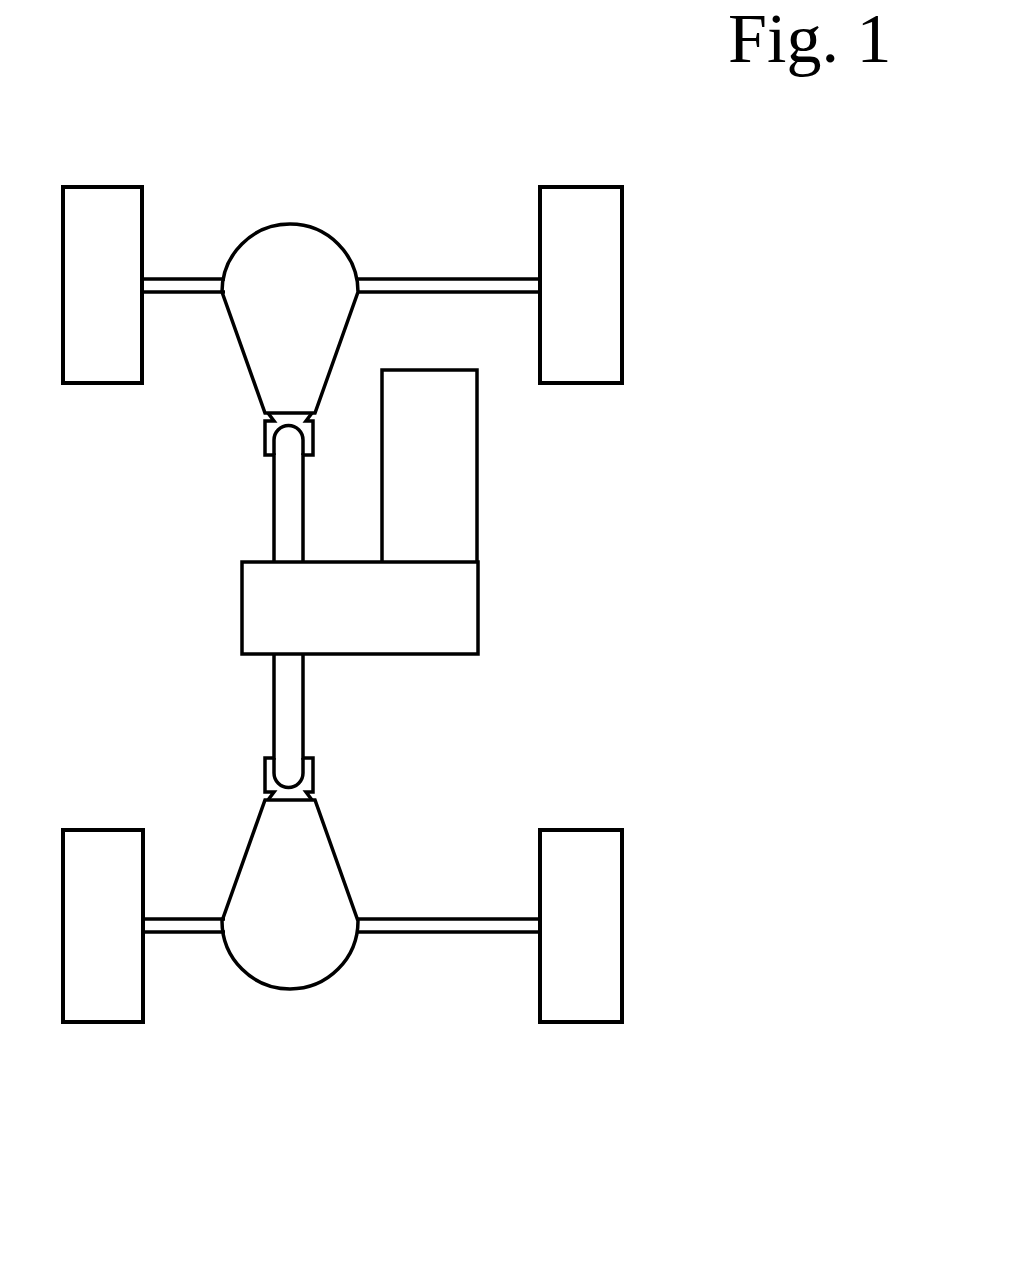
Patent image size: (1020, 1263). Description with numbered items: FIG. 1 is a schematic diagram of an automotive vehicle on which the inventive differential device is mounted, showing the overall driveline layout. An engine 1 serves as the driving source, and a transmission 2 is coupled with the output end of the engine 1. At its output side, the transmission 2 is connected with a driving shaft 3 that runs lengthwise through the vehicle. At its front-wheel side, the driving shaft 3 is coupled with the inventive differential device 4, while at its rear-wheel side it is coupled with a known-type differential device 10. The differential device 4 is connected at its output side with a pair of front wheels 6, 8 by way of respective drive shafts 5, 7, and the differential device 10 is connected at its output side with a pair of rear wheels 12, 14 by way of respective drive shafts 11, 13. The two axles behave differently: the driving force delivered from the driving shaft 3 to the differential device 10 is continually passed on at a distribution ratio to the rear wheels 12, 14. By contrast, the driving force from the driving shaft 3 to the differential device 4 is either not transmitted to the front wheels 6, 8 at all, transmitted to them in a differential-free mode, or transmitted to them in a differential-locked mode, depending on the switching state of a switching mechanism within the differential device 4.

The engine 1 is at (462, 505).
The transmission 2 is at (452, 615).
The driving shaft 3 is at (285, 507).
The differential device 4 is at (290, 240).
The drive shaft 5 is at (420, 287).
The front wheel 6 is at (578, 205).
The drive shaft 7 is at (178, 288).
The front wheel 8 is at (100, 212).
The differential device 10 is at (298, 967).
The drive shaft 11 is at (433, 925).
The rear wheel 12 is at (582, 1002).
The drive shaft 13 is at (188, 927).
The rear wheel 14 is at (113, 1003).